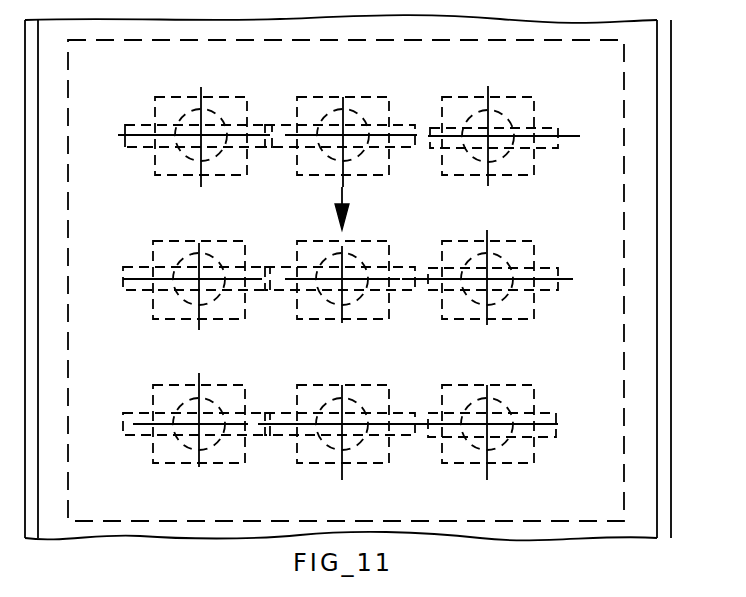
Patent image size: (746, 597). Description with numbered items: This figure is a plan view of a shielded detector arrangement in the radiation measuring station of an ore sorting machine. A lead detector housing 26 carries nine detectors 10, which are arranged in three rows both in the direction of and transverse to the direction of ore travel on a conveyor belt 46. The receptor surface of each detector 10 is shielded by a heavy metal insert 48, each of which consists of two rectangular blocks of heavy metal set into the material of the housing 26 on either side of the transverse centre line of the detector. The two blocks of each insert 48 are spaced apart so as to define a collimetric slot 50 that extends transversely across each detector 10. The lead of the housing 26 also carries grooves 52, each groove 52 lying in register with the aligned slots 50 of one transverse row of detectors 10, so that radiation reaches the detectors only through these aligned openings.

The detector 10 is at (364, 98).
The lead detector housing 26 is at (625, 152).
The conveyor belt 46 is at (647, 100).
The heavy metal insert 48 is at (527, 100).
The collimetric slot 50 is at (535, 140).
The groove 52 is at (276, 130).